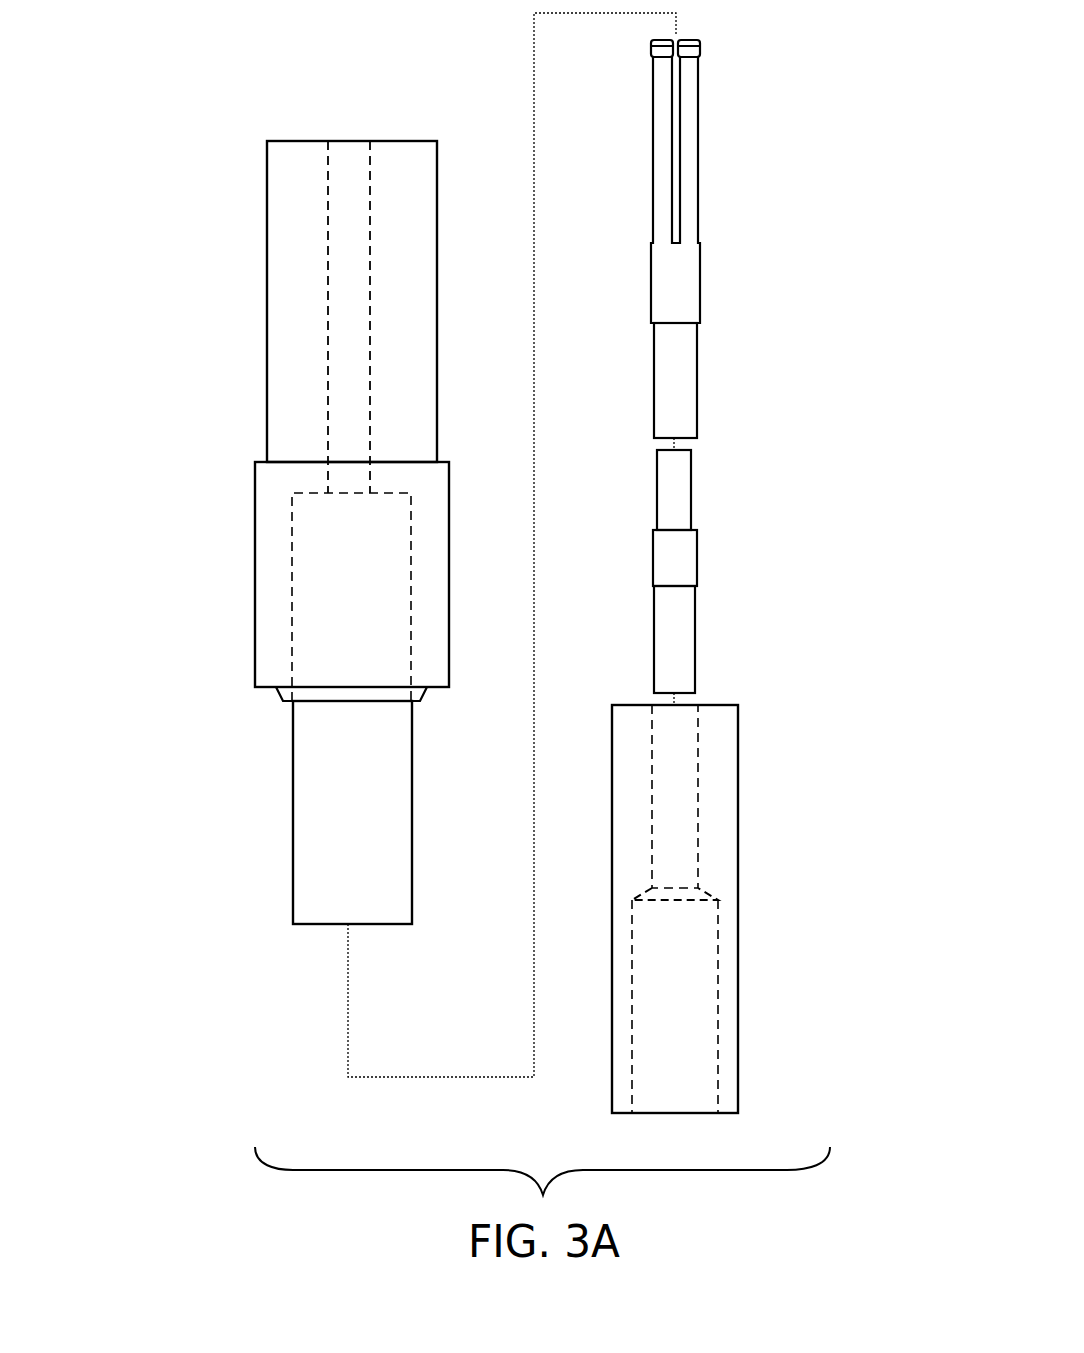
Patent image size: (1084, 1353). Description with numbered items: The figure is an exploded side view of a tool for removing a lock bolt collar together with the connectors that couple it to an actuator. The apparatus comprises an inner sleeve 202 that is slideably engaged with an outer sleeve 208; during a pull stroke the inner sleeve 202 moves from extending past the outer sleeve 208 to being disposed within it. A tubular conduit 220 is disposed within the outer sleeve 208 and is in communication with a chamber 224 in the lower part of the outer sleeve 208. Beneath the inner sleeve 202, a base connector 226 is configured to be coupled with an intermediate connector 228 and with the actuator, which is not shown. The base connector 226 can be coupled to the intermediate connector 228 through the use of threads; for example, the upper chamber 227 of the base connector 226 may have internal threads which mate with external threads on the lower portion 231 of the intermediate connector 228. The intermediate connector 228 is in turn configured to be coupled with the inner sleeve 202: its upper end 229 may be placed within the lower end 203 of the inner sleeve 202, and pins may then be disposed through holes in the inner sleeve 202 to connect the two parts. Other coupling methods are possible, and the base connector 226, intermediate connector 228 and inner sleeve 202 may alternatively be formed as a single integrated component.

The inner sleeve 202 is at (698, 278).
The lower end 203 is at (696, 402).
The outer sleeve 208 is at (267, 319).
The tubular conduit 220 is at (328, 372).
The chamber 224 is at (292, 524).
The base connector 226 is at (738, 899).
The upper chamber 227 is at (698, 810).
The intermediate connector 228 is at (696, 557).
The upper end 229 is at (691, 485).
The lower portion 231 is at (695, 642).